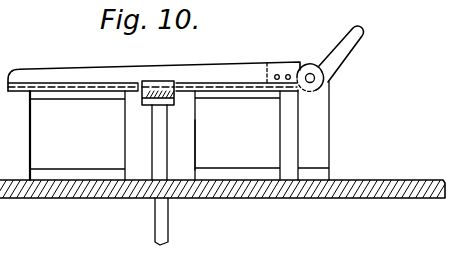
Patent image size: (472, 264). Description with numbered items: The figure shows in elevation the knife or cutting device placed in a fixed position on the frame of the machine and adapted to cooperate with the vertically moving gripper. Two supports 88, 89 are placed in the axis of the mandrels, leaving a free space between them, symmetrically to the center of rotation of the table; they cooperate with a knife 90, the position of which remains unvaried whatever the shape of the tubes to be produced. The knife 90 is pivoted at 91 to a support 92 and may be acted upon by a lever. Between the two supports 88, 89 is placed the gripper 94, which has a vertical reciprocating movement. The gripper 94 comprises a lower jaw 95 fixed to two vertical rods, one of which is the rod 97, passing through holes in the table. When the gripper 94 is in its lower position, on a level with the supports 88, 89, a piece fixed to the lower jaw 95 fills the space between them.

The support 88 is at (237, 135).
The support 89 is at (77, 135).
The knife 90 is at (217, 66).
The pivot 91 is at (310, 76).
The support 92 is at (330, 128).
The gripper 94 is at (157, 92).
The lower jaw 95 is at (167, 133).
The vertical rod 97 is at (195, 155).